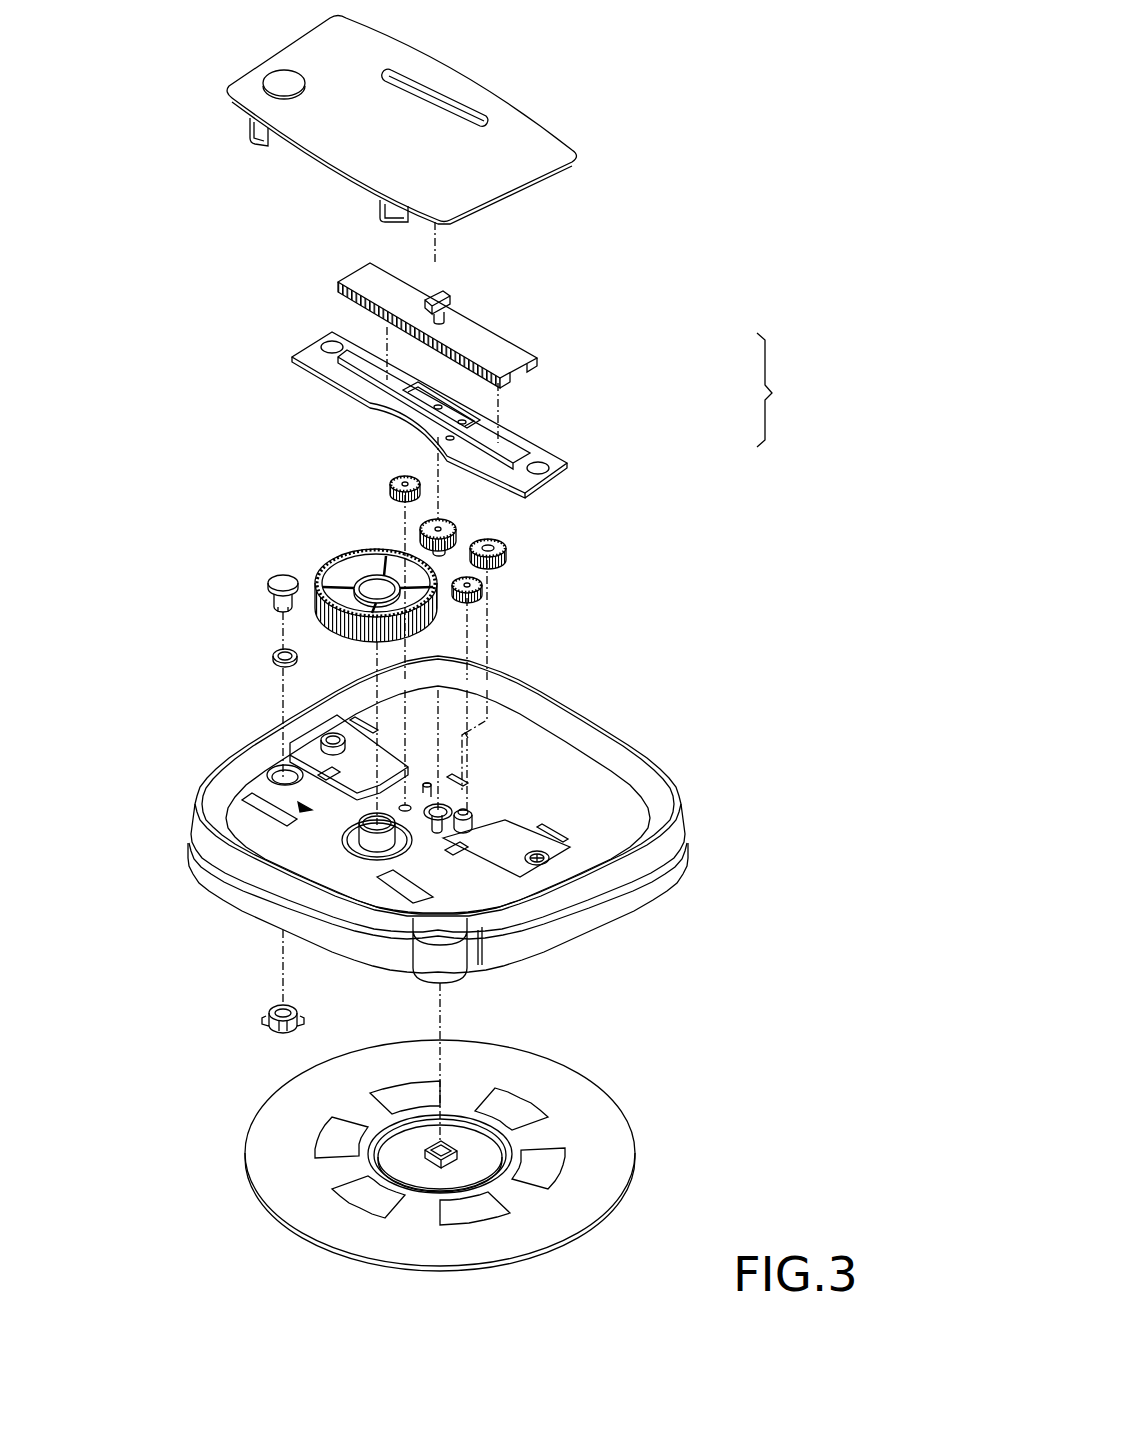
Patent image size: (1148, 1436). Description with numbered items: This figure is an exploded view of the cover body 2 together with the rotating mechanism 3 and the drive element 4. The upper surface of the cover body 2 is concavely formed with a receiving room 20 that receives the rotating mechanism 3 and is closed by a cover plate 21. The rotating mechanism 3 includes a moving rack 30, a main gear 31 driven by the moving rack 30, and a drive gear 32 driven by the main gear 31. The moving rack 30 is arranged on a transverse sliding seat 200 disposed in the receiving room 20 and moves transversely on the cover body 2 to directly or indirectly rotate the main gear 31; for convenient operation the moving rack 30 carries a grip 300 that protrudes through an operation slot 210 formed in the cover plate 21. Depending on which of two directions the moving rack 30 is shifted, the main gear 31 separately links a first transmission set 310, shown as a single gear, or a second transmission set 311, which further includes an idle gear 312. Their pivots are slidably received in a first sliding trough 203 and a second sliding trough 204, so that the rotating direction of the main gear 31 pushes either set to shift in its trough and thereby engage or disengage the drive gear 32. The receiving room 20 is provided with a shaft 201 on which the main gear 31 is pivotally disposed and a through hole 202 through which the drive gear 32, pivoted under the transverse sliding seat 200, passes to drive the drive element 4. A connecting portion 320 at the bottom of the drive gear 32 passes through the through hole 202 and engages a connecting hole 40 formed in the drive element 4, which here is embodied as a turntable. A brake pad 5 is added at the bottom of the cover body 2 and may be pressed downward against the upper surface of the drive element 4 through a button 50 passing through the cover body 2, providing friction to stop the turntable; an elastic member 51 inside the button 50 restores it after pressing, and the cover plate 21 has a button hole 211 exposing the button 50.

The cover body 2 is at (555, 733).
The receiving room 20 is at (300, 805).
The transverse sliding seat 200 is at (515, 440).
The shaft 201 is at (363, 837).
The through hole 202 is at (480, 787).
The first sliding trough 203 is at (397, 807).
The second sliding trough 204 is at (493, 857).
The cover plate 21 is at (517, 148).
The operation slot 210 is at (415, 88).
The button hole 211 is at (290, 85).
The rotating mechanism 3 is at (759, 394).
The moving rack 30 is at (365, 278).
The grip 300 is at (455, 305).
The main gear 31 is at (345, 568).
The first transmission set 310 is at (398, 478).
The second transmission set 311 is at (483, 590).
The idle gear 312 is at (505, 548).
The drive gear 32 is at (450, 525).
The connecting portion 320 is at (430, 545).
The drive element 4 is at (570, 1098).
The connecting hole 40 is at (447, 1148).
The brake pad 5 is at (270, 1023).
The button 50 is at (280, 578).
The elastic member 51 is at (275, 657).